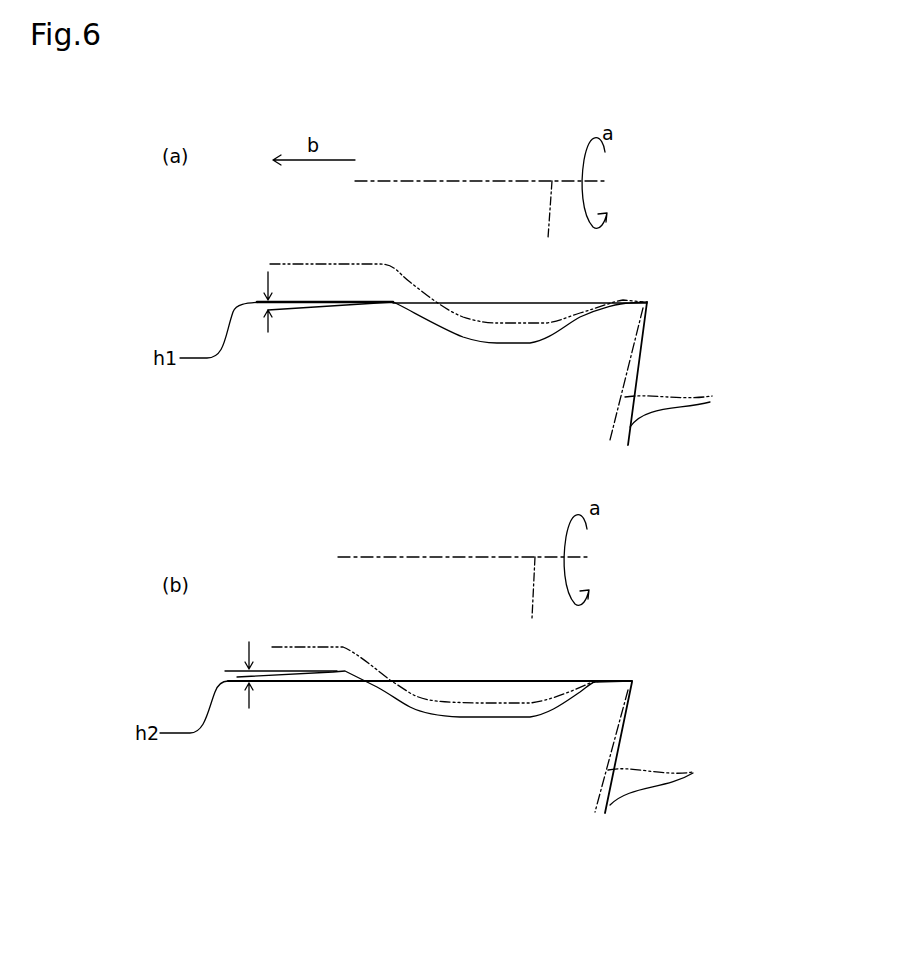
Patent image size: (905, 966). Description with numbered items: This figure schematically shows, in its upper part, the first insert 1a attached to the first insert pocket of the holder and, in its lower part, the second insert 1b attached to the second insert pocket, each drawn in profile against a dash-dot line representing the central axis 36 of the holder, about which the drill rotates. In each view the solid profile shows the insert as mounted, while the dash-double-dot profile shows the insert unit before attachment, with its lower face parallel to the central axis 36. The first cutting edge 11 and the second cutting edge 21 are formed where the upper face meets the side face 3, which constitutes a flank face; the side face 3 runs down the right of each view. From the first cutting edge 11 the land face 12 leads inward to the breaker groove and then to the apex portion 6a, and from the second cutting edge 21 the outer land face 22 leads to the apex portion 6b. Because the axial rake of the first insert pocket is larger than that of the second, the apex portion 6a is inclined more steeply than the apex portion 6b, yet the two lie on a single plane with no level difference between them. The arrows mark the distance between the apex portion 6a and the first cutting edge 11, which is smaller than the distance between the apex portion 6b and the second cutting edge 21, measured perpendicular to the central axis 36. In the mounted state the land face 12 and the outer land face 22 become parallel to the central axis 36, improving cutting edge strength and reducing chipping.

The first insert 1a is at (515, 316).
The second insert 1b is at (491, 691).
The side face 3 is at (667, 595).
The apex portion 6a is at (323, 305).
The apex portion 6b is at (307, 677).
The first cutting edge 11 is at (648, 302).
The land face 12 is at (638, 282).
The second cutting edge 21 is at (632, 680).
The outer land face 22 is at (621, 664).
The central axis 36 is at (545, 414).